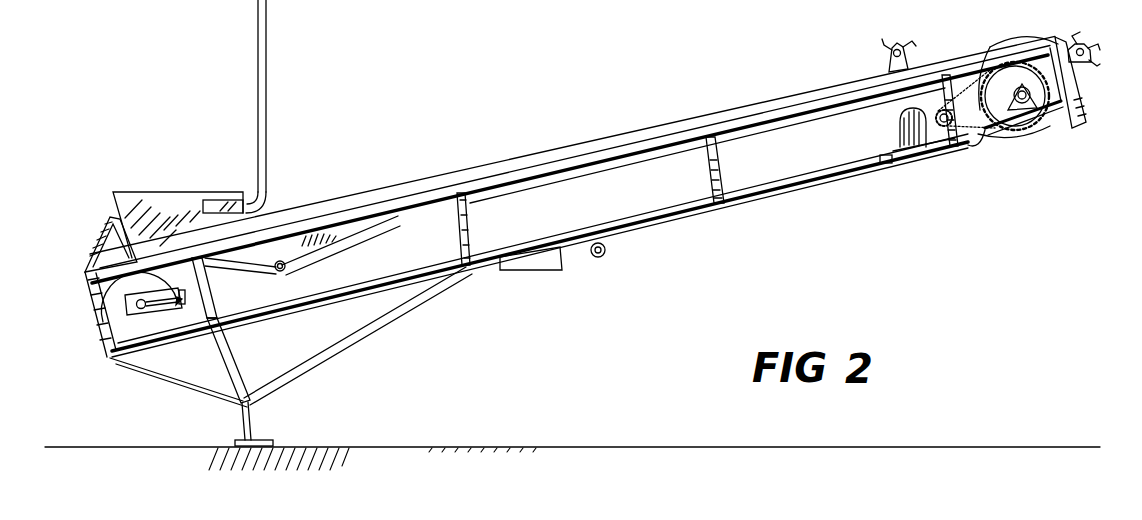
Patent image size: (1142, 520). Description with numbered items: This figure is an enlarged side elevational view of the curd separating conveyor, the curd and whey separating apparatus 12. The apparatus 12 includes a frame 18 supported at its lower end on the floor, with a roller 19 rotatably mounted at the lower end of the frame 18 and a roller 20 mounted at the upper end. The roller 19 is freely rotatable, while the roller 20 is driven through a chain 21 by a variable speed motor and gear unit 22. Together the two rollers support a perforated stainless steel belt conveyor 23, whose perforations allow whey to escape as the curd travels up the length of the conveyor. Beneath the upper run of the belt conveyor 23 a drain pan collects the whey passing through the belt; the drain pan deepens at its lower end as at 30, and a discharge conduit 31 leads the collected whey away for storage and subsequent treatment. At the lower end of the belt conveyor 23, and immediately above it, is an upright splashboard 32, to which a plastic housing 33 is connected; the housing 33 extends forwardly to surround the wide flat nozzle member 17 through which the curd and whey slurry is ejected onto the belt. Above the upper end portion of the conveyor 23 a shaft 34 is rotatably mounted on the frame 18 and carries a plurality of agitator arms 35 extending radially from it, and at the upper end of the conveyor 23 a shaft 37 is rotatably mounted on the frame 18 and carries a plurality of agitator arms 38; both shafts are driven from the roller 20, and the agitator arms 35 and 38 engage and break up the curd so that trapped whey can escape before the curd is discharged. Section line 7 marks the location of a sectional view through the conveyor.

The section line 7- 7 is at (508, 100).
The curd and whey separating apparatus 12 is at (585, 241).
The wide flat nozzle member 17 is at (213, 200).
The frame 18 is at (366, 335).
The roller 19 is at (108, 302).
The roller 20 is at (1013, 133).
The chain 21 is at (1040, 128).
The variable speed motor and gear unit 22 is at (900, 135).
The perforated stainless steel belt conveyor 23 is at (988, 147).
The deepened lower end of drain pan 30 is at (371, 233).
The discharge conduit 31 is at (278, 271).
The upright splashboard 32 is at (115, 202).
The plastic housing 33 is at (156, 190).
The shaft 34 is at (898, 46).
The agitator arms 35 is at (887, 50).
The shaft 37 is at (1089, 52).
The agitator arms 38 is at (1085, 40).